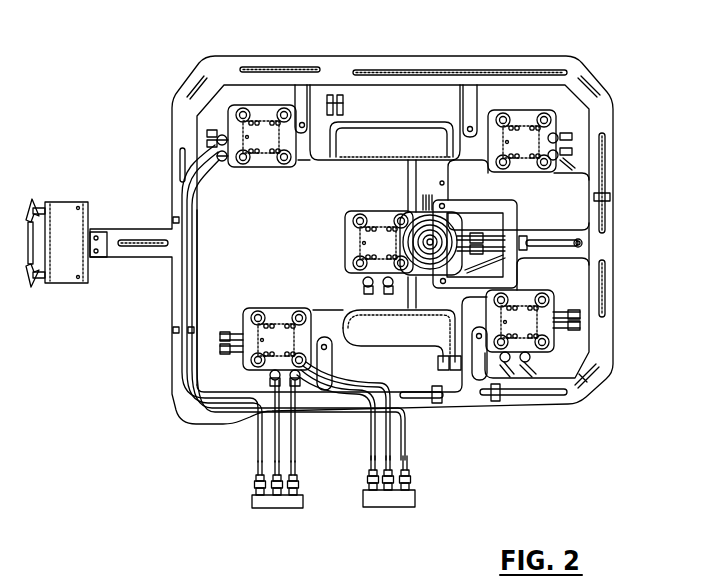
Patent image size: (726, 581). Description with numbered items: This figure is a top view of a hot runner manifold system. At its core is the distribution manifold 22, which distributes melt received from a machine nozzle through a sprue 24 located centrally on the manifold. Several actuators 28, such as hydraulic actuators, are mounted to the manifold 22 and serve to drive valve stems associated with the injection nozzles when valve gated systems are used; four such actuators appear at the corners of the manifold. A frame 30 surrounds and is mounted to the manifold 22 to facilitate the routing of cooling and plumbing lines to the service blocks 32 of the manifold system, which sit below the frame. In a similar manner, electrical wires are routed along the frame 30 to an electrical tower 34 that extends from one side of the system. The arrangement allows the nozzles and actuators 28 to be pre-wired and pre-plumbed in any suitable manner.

The distribution manifold 22 is at (397, 140).
The sprue 24 is at (443, 240).
The actuators 28 is at (266, 130).
The frame 30 is at (618, 132).
The service blocks 32 is at (277, 508).
The electrical tower 34 is at (62, 200).